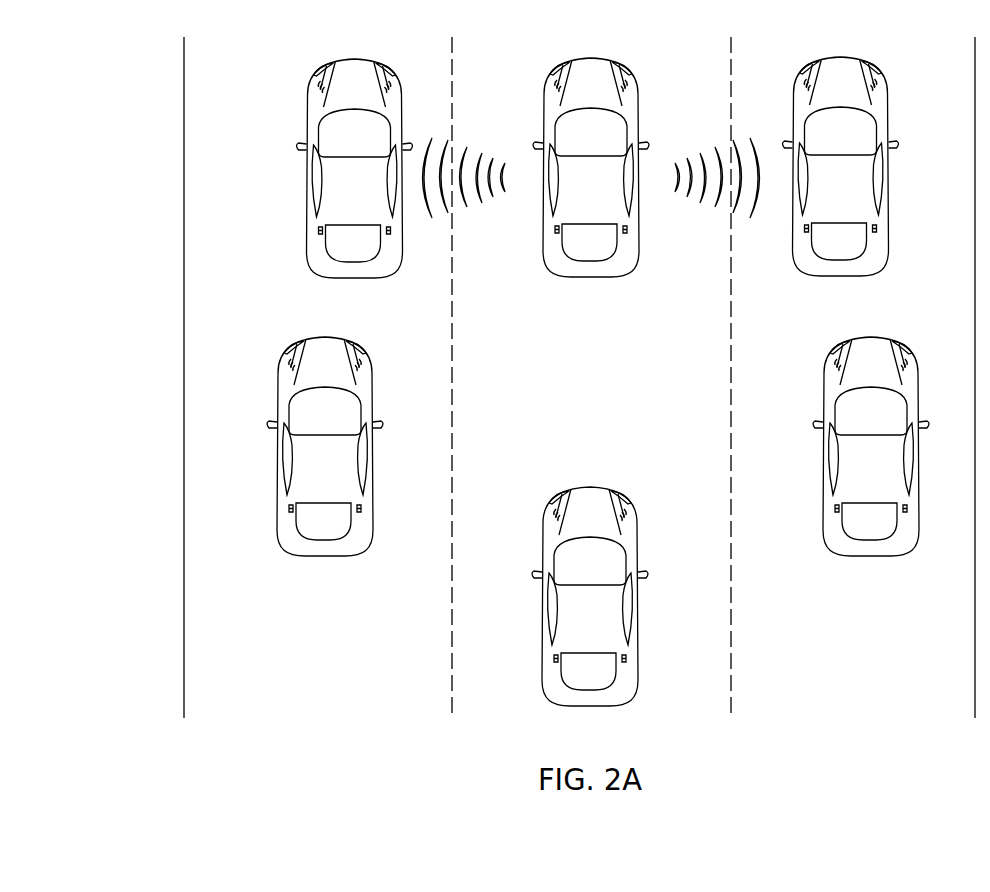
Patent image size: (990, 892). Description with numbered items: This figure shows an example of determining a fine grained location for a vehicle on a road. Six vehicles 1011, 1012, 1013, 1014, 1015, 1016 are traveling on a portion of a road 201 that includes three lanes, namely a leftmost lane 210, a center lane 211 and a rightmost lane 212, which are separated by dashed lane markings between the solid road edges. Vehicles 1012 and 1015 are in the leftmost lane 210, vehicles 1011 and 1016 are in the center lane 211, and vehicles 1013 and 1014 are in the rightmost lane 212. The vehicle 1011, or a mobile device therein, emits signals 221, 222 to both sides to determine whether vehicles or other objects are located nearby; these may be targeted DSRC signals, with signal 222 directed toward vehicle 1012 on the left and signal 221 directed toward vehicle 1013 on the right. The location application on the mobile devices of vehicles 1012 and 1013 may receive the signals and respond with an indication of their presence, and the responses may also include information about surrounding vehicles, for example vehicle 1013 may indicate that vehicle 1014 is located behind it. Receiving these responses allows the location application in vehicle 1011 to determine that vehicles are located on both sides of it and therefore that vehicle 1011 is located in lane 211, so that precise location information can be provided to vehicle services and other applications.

The road 201 is at (184, 356).
The leftmost lane 210 is at (328, 694).
The center lane 211 is at (697, 689).
The rightmost lane 212 is at (871, 692).
The signal 221 is at (710, 148).
The signal 222 is at (472, 147).
The vehicle 1011 is at (590, 278).
The vehicle 1012 is at (382, 278).
The vehicle 1013 is at (813, 280).
The vehicle 1014 is at (870, 557).
The vehicle 1015 is at (325, 557).
The vehicle 1016 is at (640, 527).